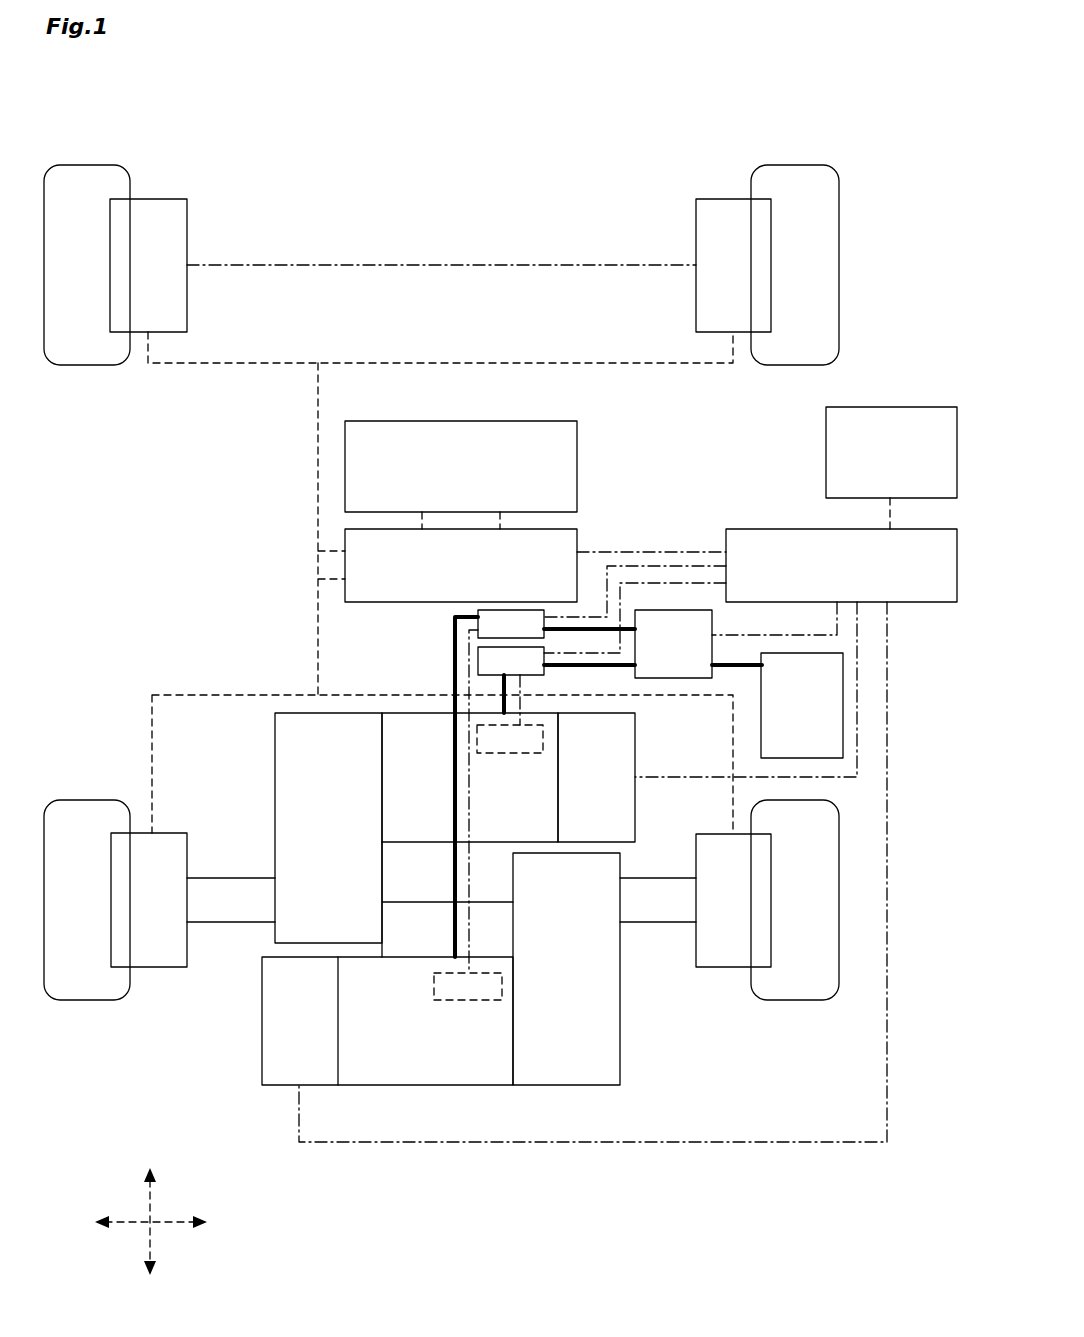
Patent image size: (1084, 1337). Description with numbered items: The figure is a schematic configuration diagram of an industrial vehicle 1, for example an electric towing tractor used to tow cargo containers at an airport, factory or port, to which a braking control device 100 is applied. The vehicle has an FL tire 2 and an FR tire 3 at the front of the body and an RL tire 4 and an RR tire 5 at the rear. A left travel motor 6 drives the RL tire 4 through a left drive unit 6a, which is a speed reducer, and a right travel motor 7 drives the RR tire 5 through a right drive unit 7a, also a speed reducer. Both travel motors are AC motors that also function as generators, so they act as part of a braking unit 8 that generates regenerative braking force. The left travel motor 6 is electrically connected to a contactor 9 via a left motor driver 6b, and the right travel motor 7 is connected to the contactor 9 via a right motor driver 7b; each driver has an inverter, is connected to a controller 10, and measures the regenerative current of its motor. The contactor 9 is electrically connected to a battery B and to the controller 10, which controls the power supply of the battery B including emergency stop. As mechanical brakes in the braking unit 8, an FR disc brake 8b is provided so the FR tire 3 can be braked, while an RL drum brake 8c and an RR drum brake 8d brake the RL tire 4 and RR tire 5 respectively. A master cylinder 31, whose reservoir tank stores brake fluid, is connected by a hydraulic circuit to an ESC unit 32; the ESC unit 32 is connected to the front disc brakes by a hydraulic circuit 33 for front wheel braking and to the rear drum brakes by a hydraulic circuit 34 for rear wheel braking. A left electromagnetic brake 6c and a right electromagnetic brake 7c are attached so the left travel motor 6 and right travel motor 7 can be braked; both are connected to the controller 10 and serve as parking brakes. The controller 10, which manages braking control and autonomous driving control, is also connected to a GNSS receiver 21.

The braking control device 100 is at (855, 82).
The industrial vehicle 1 is at (558, 147).
The FL tire 2 is at (75, 164).
The FR tire 3 is at (803, 164).
The RL tire 4 is at (75, 1001).
The RR tire 5 is at (812, 1001).
The left travel motor 6 is at (412, 843).
The left drive unit 6a is at (274, 762).
The left motor driver 6b is at (477, 663).
The left electromagnetic brake 6c is at (636, 800).
The right travel motor 7 is at (386, 1086).
The right drive unit 7a is at (621, 1068).
The right motor driver 7b is at (477, 628).
The right electromagnetic brake 7c is at (261, 1066).
The braking unit 8 is at (440, 585).
The FR disc brake 8b is at (167, 198).
The RL drum brake 8c is at (170, 968).
The RR drum brake 8d is at (716, 968).
The contactor 9 is at (690, 679).
The battery B is at (844, 722).
The controller 10 is at (927, 603).
The GNSS receiver 21 is at (929, 406).
The master cylinder 31 is at (578, 502).
The ESC unit 32 is at (578, 535).
The hydraulic circuit for front wheel braking 33 is at (286, 380).
The hydraulic circuit for rear wheel braking 34 is at (286, 678).